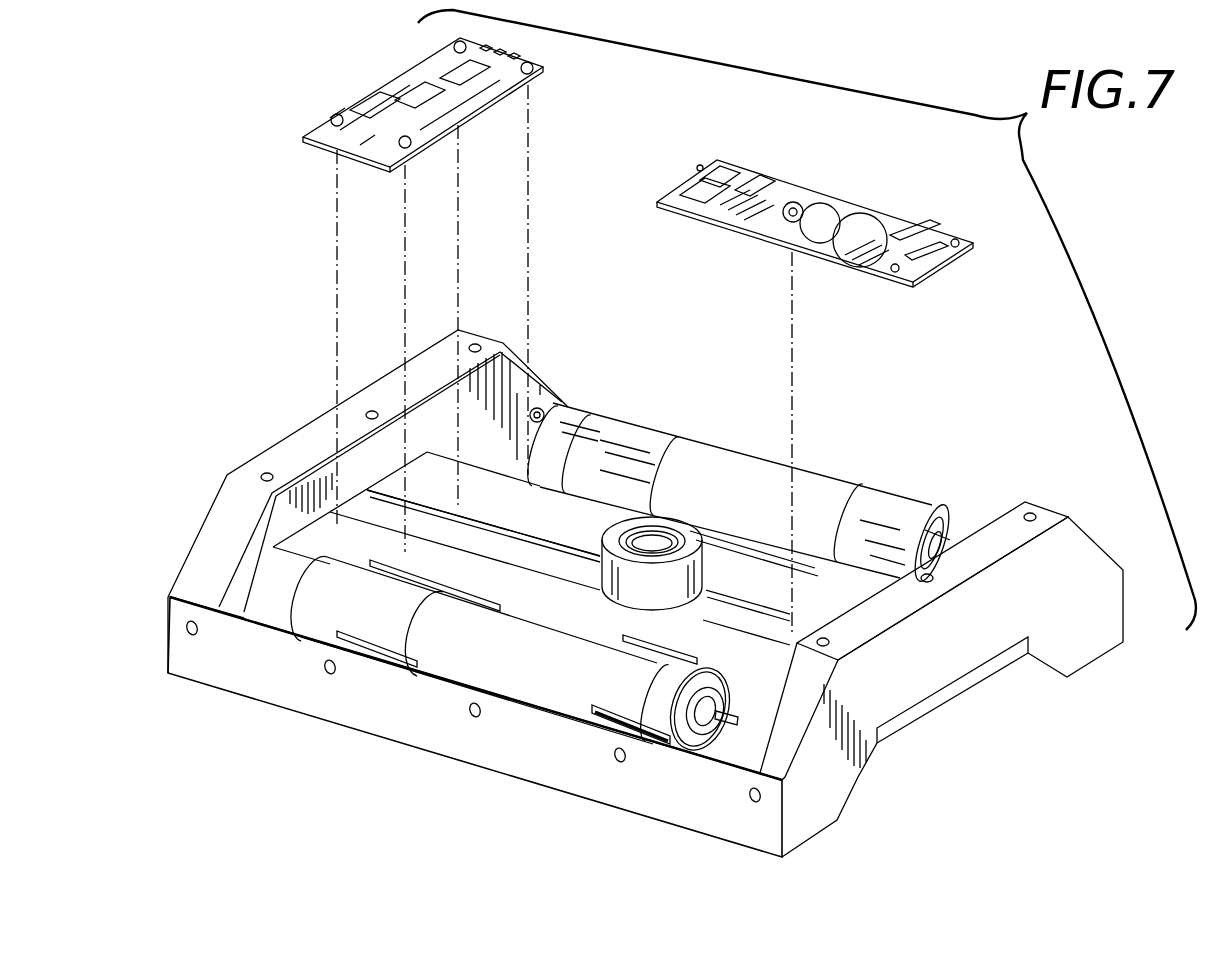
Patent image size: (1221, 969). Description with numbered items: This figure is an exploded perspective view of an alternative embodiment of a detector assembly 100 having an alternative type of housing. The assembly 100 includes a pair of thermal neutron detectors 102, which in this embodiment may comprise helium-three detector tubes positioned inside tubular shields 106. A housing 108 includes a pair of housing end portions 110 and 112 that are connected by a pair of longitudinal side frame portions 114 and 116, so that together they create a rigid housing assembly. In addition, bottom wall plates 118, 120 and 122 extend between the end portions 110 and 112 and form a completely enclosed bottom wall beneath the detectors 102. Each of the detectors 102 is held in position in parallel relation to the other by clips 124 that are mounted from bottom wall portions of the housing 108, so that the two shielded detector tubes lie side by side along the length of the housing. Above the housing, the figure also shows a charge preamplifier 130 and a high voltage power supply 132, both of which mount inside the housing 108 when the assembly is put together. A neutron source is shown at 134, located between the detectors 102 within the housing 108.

The detector assembly 100 is at (845, 415).
The thermal neutron detector 102 is at (947, 518).
The tubular shield 106 is at (583, 423).
The housing 108 is at (515, 777).
The housing end portion 110 is at (1100, 605).
The housing end portion 112 is at (262, 473).
The longitudinal side frame portion 114 is at (367, 728).
The longitudinal side frame portion 116 is at (973, 520).
The bottom wall plate 118 is at (243, 618).
The bottom wall plate 120 is at (370, 508).
The bottom wall plate 122 is at (435, 470).
The clip 124 is at (655, 445).
The charge preamplifier 130 is at (437, 52).
The high voltage power supply 132 is at (795, 193).
The neutron source 134 is at (610, 520).